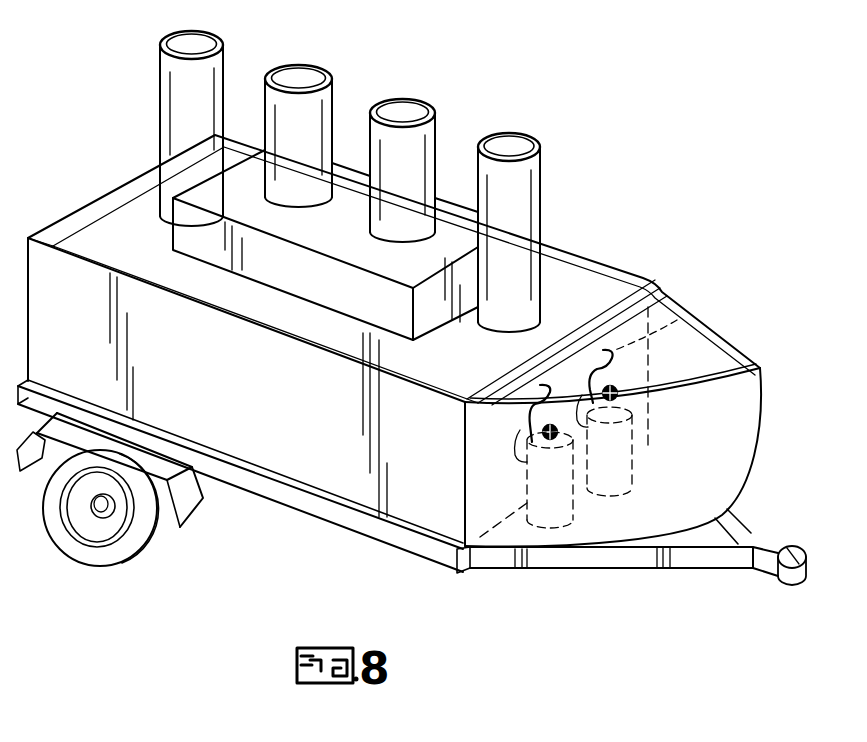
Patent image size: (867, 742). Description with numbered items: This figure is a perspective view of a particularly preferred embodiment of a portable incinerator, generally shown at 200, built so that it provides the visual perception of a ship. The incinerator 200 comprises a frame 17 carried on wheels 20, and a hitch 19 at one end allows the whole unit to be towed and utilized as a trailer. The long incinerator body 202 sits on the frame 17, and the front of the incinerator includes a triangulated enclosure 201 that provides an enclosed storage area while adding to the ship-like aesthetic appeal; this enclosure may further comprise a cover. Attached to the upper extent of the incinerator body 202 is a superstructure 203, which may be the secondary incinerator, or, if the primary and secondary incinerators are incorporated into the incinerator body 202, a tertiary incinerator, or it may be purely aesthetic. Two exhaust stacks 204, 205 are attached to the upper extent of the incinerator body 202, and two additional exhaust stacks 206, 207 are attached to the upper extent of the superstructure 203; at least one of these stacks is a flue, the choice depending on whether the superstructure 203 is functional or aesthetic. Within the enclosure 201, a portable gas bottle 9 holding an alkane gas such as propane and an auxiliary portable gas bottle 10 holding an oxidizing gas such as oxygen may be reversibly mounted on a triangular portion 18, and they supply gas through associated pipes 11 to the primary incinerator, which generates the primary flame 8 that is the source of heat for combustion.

The incinerator 200 is at (114, 74).
The triangulated enclosure 201 is at (762, 443).
The incinerator body 202 is at (228, 381).
The superstructure 203 is at (210, 200).
The exhaust stack 204 is at (530, 195).
The exhaust stack 205 is at (217, 80).
The exhaust stack 206 is at (427, 146).
The exhaust stack 207 is at (318, 107).
The primary flame 8 is at (519, 414).
The portable gas bottle 9 is at (556, 527).
The auxiliary portable gas bottle 10 is at (628, 500).
The pipes 11 is at (677, 320).
The frame 17 is at (303, 505).
The triangular portion 18 is at (755, 507).
The hitch 19 is at (792, 554).
The wheels 20 is at (138, 543).